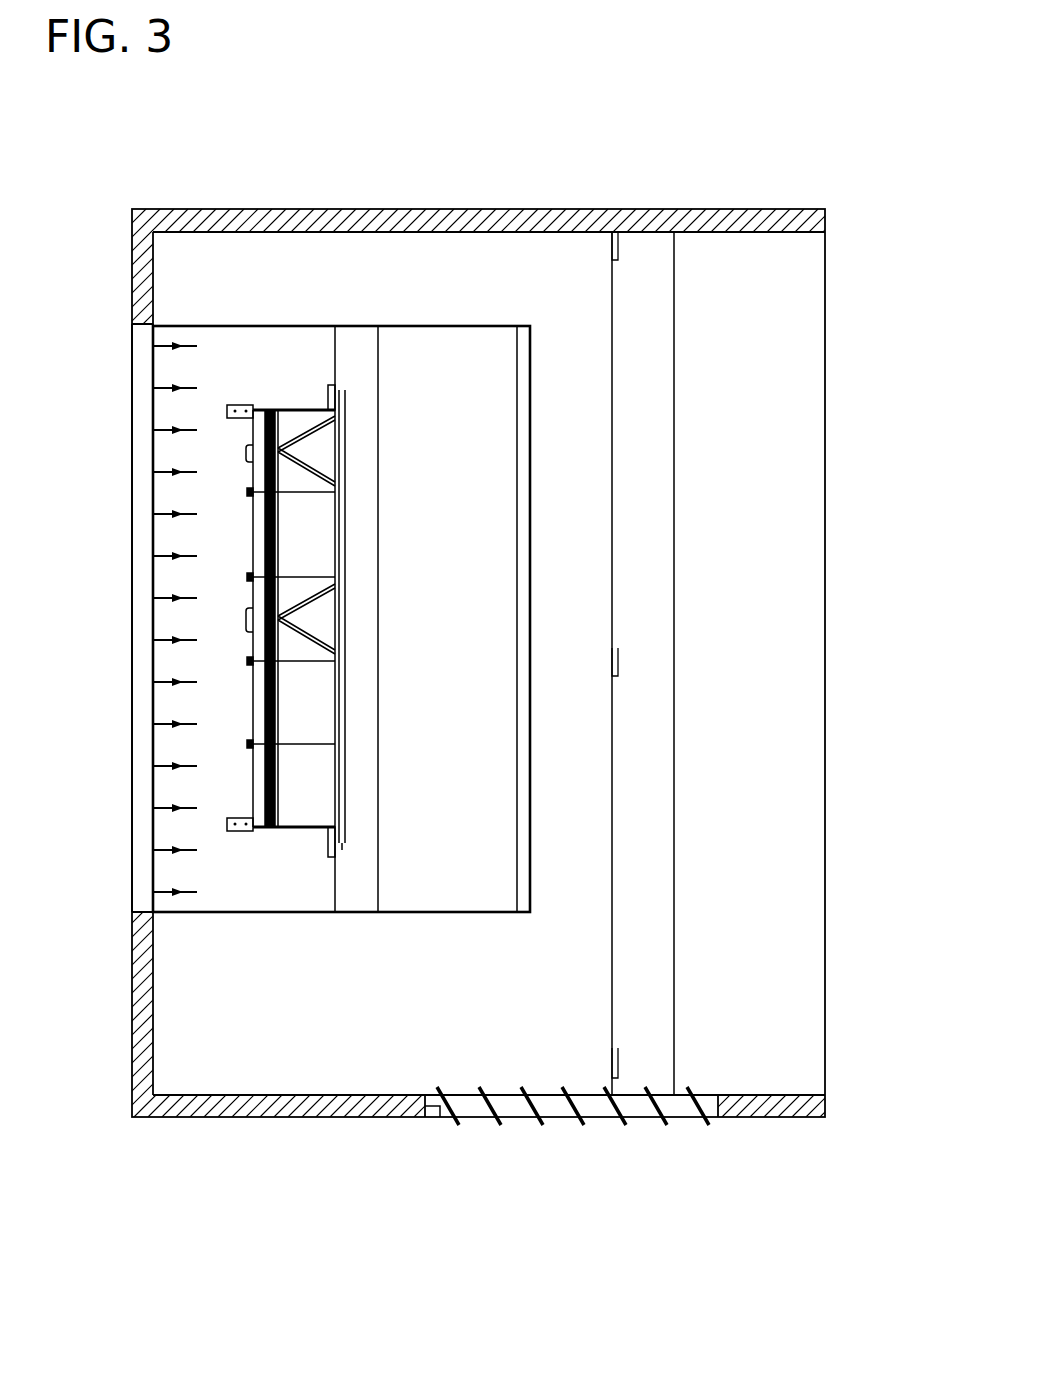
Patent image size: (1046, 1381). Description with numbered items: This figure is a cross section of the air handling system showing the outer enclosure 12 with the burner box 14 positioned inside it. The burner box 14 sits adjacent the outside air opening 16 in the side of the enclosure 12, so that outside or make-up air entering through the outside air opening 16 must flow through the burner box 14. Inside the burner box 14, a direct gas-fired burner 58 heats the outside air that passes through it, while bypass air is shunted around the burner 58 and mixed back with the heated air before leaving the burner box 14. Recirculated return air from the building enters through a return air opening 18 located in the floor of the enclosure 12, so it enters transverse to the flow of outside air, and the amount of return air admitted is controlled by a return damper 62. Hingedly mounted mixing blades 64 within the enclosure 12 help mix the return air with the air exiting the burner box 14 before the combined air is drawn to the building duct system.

The outer enclosure 12 is at (692, 209).
The burner box 14 is at (437, 324).
The outside air opening 16 is at (138, 327).
The return air opening 18 is at (436, 1108).
The direct gas-fired burner 58 is at (305, 598).
The return damper 62 is at (538, 1123).
The mixing blades 64 is at (675, 540).